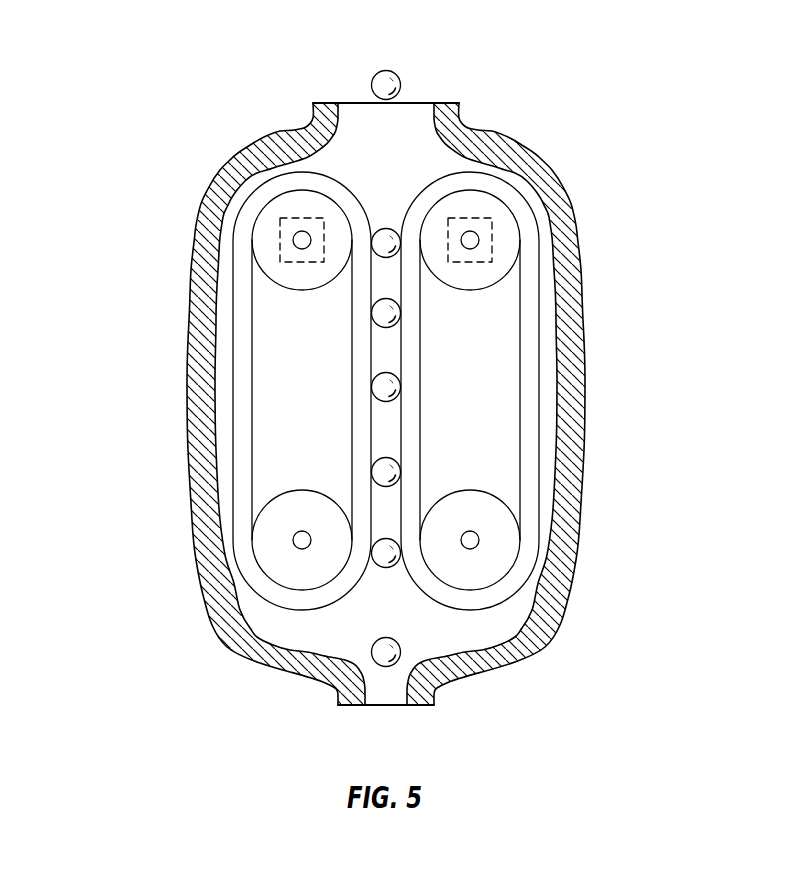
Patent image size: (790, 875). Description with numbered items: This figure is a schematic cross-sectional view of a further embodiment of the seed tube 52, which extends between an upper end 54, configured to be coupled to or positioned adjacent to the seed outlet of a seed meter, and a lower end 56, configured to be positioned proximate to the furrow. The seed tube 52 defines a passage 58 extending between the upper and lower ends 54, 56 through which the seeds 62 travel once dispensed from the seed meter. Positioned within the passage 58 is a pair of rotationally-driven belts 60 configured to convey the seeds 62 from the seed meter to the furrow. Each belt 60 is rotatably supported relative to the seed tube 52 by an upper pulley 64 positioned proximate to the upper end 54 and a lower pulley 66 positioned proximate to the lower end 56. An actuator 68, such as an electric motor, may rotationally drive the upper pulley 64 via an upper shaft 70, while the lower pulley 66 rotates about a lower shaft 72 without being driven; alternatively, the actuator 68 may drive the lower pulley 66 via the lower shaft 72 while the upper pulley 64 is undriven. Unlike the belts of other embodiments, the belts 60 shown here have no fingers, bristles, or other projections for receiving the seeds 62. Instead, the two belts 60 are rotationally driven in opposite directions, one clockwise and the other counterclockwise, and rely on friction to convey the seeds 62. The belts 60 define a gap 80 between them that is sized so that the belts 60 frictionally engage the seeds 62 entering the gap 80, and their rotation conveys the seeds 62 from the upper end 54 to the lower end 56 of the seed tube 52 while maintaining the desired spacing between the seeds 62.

The seed tube 52 is at (78, 146).
The upper end 54 is at (445, 102).
The lower end 56 is at (395, 706).
The passage 58 is at (381, 148).
The rotationally-driven belt 60 is at (278, 188).
The seed 62 is at (385, 70).
The upper pulley 64 is at (278, 280).
The lower pulley 66 is at (297, 490).
The actuator 68 is at (280, 242).
The upper shaft 70 is at (307, 249).
The lower shaft 72 is at (300, 550).
The gap 80 is at (380, 433).